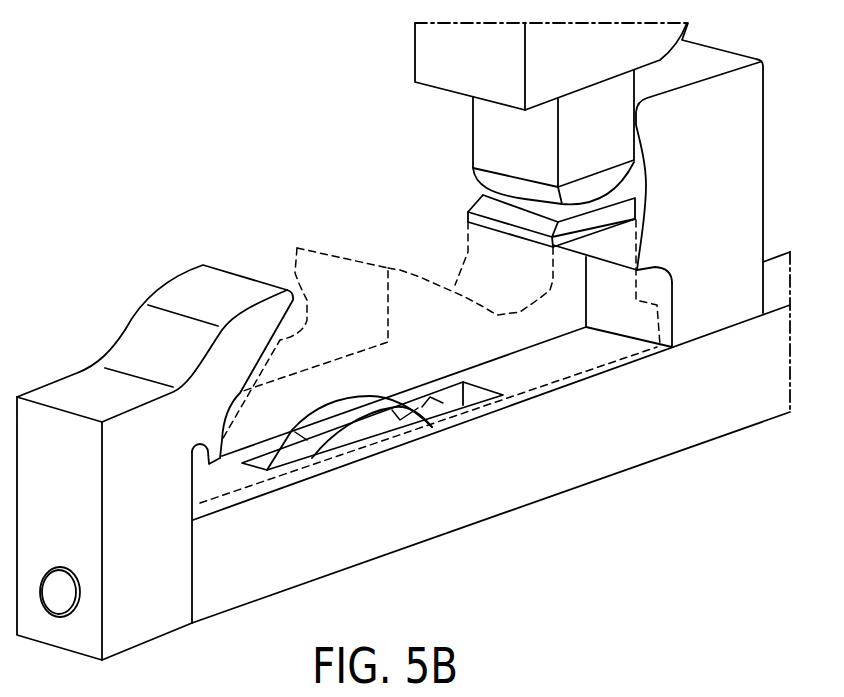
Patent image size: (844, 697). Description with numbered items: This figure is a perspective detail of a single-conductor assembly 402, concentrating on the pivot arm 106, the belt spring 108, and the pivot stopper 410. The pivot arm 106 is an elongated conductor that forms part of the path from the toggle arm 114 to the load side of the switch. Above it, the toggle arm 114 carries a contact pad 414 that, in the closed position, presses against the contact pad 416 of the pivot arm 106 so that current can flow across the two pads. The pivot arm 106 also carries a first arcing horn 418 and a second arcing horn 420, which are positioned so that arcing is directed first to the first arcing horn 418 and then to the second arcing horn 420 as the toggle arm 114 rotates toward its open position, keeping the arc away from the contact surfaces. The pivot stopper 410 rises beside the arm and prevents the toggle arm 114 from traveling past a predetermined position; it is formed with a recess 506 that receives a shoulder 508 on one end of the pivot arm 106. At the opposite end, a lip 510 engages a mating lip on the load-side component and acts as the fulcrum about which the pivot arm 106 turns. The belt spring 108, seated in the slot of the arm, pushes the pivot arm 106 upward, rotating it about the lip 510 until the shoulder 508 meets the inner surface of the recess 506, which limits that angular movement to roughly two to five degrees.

The single-conductor assembly 402 is at (243, 88).
The toggle arm 114 is at (425, 52).
The pivot stopper 410 is at (742, 103).
The contact pad 414 is at (480, 173).
The contact pad 416 is at (482, 200).
The first arcing horn 418 is at (337, 250).
The second arcing horn 420 is at (240, 281).
The recess 506 is at (672, 268).
The shoulder 508 is at (650, 343).
The pivot arm 106 is at (587, 373).
The belt spring 108 is at (377, 417).
The lip 510 is at (216, 460).